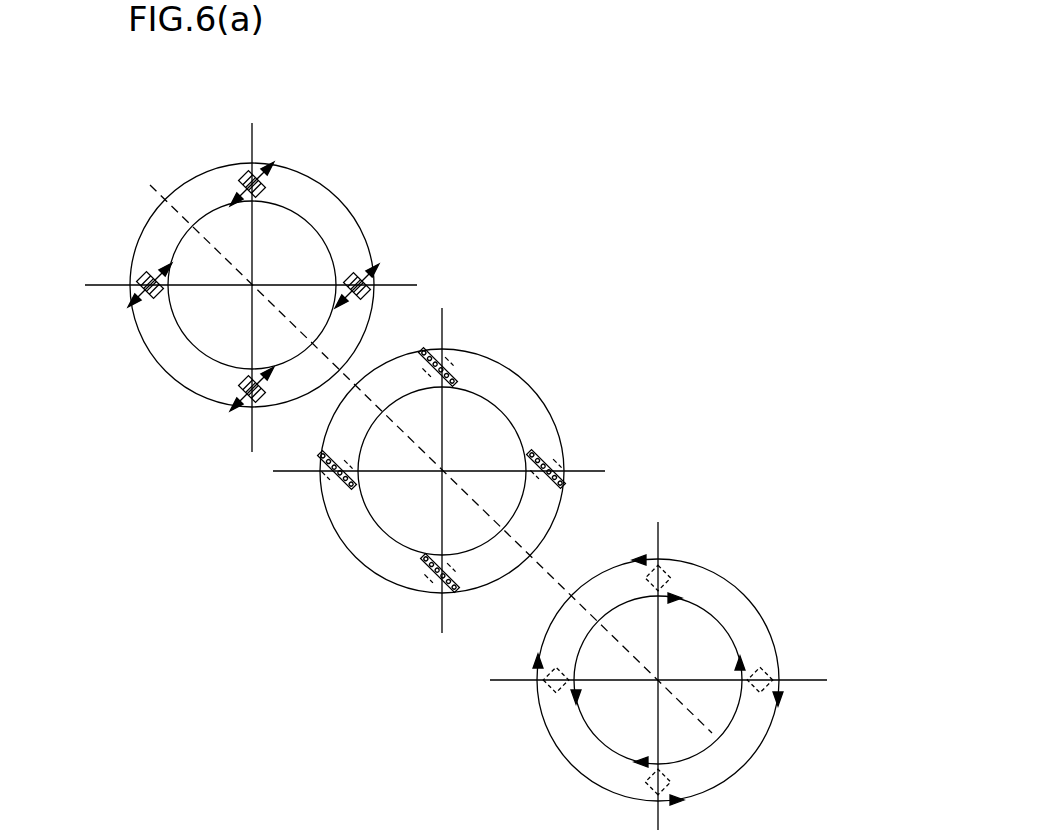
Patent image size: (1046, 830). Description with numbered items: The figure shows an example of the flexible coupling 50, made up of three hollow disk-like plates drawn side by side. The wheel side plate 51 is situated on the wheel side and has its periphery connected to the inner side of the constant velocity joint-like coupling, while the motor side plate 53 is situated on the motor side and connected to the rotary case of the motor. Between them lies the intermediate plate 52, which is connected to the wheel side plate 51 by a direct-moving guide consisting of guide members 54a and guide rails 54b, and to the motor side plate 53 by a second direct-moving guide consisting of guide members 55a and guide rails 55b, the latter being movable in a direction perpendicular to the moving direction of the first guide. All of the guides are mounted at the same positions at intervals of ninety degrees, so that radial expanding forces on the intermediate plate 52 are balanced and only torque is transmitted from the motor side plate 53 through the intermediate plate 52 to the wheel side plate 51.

The flexible coupling 50 is at (599, 304).
The wheel side plate 51 is at (327, 218).
The intermediate plate 52 is at (540, 435).
The motor side plate 53 is at (733, 615).
The guide members 54a is at (258, 167).
The guide rails 54b is at (450, 348).
The guide members 55a is at (672, 554).
The guide rails 55b is at (458, 384).